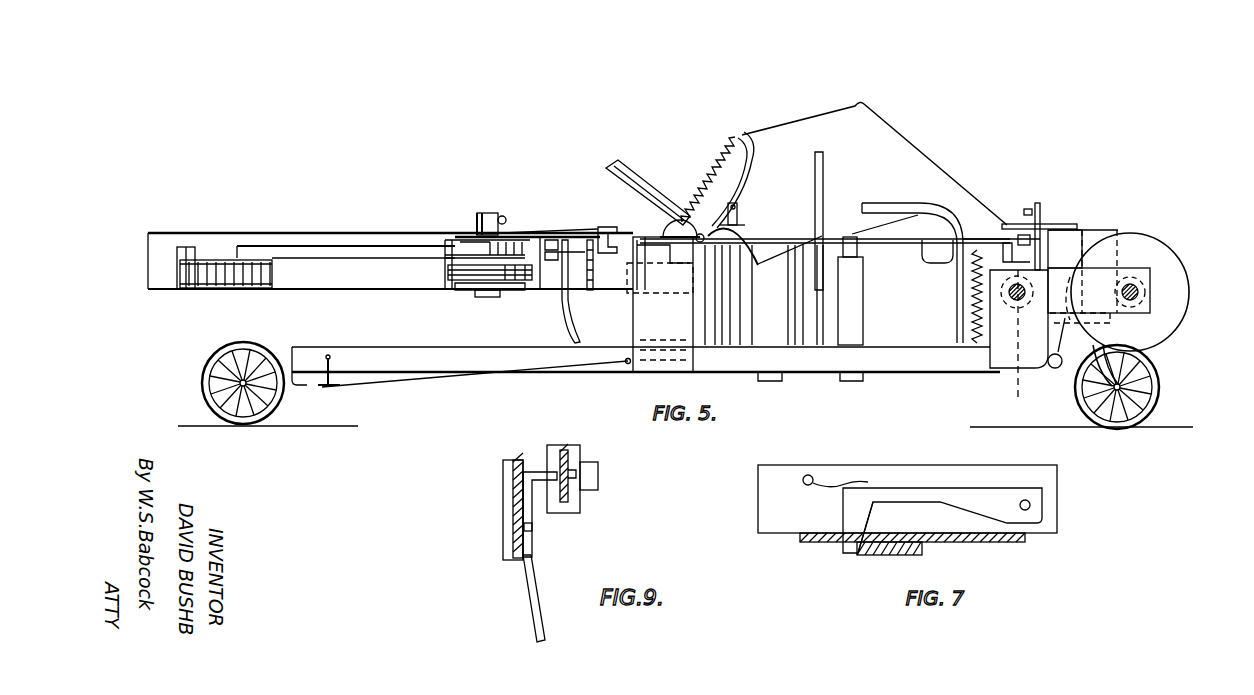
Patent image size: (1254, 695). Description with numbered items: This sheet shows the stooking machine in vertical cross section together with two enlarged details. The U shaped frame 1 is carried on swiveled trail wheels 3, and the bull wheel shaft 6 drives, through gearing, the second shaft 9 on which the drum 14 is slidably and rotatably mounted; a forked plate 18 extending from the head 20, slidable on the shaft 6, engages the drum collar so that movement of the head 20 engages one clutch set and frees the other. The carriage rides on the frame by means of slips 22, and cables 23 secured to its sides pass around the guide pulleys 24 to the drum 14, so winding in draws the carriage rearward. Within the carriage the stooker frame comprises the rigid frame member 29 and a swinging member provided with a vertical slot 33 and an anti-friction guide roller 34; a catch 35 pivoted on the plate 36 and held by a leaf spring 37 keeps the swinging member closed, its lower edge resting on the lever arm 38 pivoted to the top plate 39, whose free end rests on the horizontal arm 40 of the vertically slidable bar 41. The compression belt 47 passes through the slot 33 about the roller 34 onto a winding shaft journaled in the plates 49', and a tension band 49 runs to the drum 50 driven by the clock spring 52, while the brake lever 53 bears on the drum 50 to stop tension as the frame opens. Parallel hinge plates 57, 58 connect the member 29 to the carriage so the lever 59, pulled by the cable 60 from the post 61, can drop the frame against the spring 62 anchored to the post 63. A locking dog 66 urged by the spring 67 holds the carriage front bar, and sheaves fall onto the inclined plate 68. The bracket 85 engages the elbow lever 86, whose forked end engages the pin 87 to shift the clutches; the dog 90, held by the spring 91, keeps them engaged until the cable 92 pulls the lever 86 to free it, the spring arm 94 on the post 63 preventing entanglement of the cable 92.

In FIG. 7, the U shaped frame 1 is at (1060, 490).
In FIG. 5, the swiveled trail wheels 3 is at (247, 430).
In FIG. 5, the shaft 6 is at (1025, 300).
In FIG. 5, the second shaft 9 is at (1138, 292).
In FIG. 5, the drum 14 is at (1185, 268).
In FIG. 5, the forked plate 18 is at (1104, 230).
In FIG. 5, the head 20 is at (1027, 343).
In FIG. 5, the slips 22 is at (645, 355).
In FIG. 5, the cables 23 is at (565, 382).
In FIG. 5, the guide pulleys 24 is at (327, 390).
In FIG. 9, the rigid frame member 29 is at (516, 540).
In FIG. 5, the vertical slot 33 is at (149, 289).
In FIG. 5, the anti-friction guide roller 34 is at (190, 247).
In FIG. 5, the catch 35 is at (477, 224).
In FIG. 5, the plate 36 is at (504, 230).
In FIG. 5, the leaf spring 37 is at (488, 213).
In FIG. 5, the lever arm 38 is at (571, 235).
In FIG. 9, the lever arm 38 is at (570, 456).
In FIG. 5, the top plate 39 is at (490, 297).
In FIG. 5, the horizontal arm 40 is at (598, 227).
In FIG. 9, the horizontal arm 40 is at (542, 470).
In FIG. 5, the bar 41 is at (579, 330).
In FIG. 9, the bar 41 is at (538, 585).
In FIG. 5, the compression belt 47 is at (201, 292).
In FIG. 5, the tension band 49 is at (346, 210).
In FIG. 5, the plates 49' is at (226, 232).
In FIG. 5, the drum 50 is at (462, 238).
In FIG. 5, the clock spring 52 is at (455, 292).
In FIG. 5, the brake lever 53 is at (545, 297).
In FIG. 5, the upper hinge plate 57 is at (645, 235).
In FIG. 5, the hinge plate 58 is at (646, 290).
In FIG. 5, the lever 59 is at (760, 240).
In FIG. 5, the cable 60 is at (878, 244).
In FIG. 5, the post 61 is at (948, 207).
In FIG. 5, the spring 62 is at (727, 140).
In FIG. 5, the post 63 is at (760, 135).
In FIG. 5, the locking dog 66 is at (975, 237).
In FIG. 5, the spring 67 is at (972, 300).
In FIG. 5, the inclined plate 68 is at (635, 170).
In FIG. 5, the bracket 85 is at (739, 205).
In FIG. 5, the elbow lever 86 is at (1046, 224).
In FIG. 7, the elbow lever 86 is at (870, 556).
In FIG. 5, the pin 87 is at (1060, 224).
In FIG. 5, the dog 90 is at (969, 435).
In FIG. 7, the dog 90 is at (908, 488).
In FIG. 7, the spring 91 is at (830, 481).
In FIG. 5, the cable 92 is at (900, 125).
In FIG. 5, the spring arm 94 is at (842, 105).